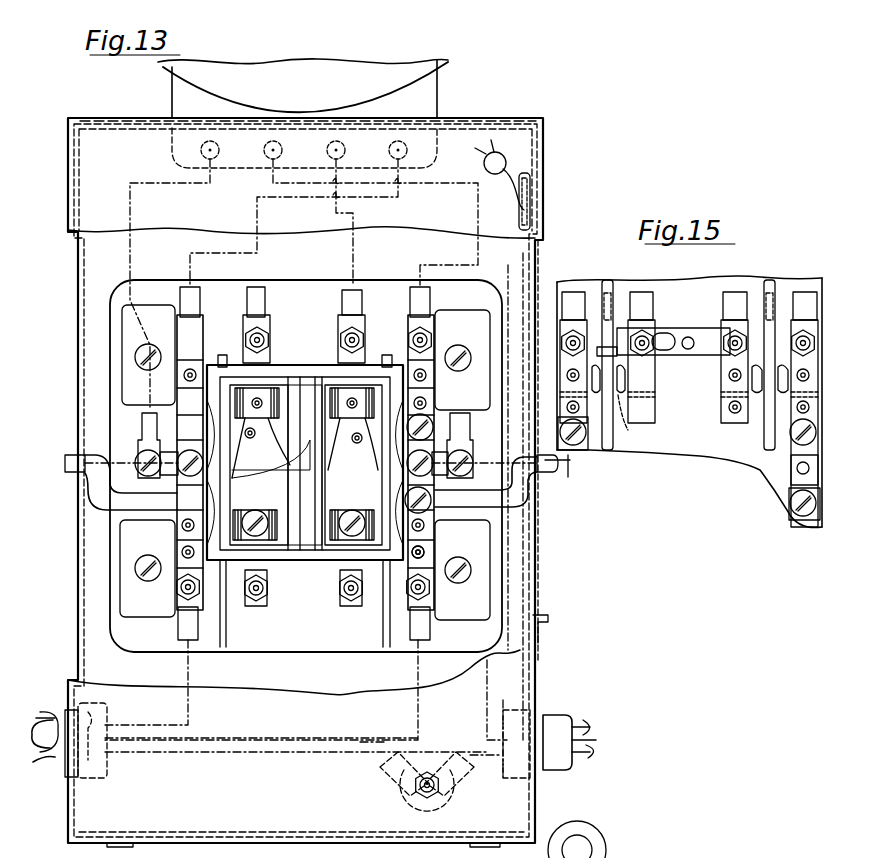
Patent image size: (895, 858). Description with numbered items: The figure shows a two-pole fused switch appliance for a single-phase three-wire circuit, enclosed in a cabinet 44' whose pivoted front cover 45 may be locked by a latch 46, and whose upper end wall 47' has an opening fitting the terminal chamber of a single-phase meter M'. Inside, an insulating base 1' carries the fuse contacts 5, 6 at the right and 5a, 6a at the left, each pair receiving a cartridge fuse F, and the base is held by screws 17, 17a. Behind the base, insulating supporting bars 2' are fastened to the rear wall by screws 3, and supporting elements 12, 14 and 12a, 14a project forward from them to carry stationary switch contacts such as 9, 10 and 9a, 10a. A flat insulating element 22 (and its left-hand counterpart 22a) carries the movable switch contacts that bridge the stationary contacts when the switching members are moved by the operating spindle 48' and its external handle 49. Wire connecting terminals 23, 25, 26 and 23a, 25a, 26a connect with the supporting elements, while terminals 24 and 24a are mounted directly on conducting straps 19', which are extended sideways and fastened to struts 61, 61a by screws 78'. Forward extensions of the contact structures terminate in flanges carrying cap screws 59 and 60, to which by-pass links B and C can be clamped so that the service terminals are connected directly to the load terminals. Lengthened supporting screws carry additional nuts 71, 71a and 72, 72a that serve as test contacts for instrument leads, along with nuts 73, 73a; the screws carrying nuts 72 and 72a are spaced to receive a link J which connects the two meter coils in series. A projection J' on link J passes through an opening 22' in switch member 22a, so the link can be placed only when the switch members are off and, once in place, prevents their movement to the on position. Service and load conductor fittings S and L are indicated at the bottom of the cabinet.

In FIG. 13, the front cover 45 is at (132, 166).
In FIG. 13, the upper end wall 47' is at (308, 106).
In FIG. 13, the latch 46 is at (532, 203).
In FIG. 13, the single phase meter M' is at (303, 99).
In FIG. 13, the wire connecting terminal 26a is at (185, 298).
In FIG. 15, the wire connecting terminal 26a is at (573, 292).
In FIG. 13, the wire connecting terminal 25a is at (262, 300).
In FIG. 15, the wire connecting terminal 25a is at (642, 292).
In FIG. 13, the wire connecting terminal 25 is at (356, 302).
In FIG. 15, the wire connecting terminal 25 is at (735, 292).
In FIG. 13, the wire connecting terminal 26 is at (427, 300).
In FIG. 15, the wire connecting terminal 26 is at (803, 292).
In FIG. 13, the supporting device 2' is at (306, 466).
In FIG. 15, the supporting device 2' is at (689, 389).
In FIG. 13, the screw 3 is at (162, 350).
In FIG. 13, the switch member 22a is at (225, 355).
In FIG. 15, the switch member 22a is at (622, 268).
In FIG. 13, the nut 72a is at (272, 340).
In FIG. 15, the nut 72a is at (650, 340).
In FIG. 13, the nut 72 is at (342, 341).
In FIG. 15, the nut 72 is at (725, 335).
In FIG. 13, the flat insulating element 22 is at (389, 346).
In FIG. 15, the flat insulating element 22 is at (775, 465).
In FIG. 13, the supporting element 14a is at (184, 378).
In FIG. 13, the supporting element 14 is at (60, 452).
In FIG. 15, the supporting element 14 is at (561, 474).
In FIG. 13, the cap screw 60 is at (428, 420).
In FIG. 15, the cap screw 60 is at (790, 430).
In FIG. 13, the fuse contact 6a is at (278, 405).
In FIG. 13, the fuse contact 6 is at (360, 410).
In FIG. 13, the wire connecting terminal 24a is at (145, 432).
In FIG. 13, the wire connecting terminal 24 is at (470, 438).
In FIG. 13, the fuse F is at (270, 465).
In FIG. 13, the screw 17a is at (258, 512).
In FIG. 13, the fuse contact 5a is at (280, 512).
In FIG. 13, the fuse contact 5 is at (372, 500).
In FIG. 13, the screw 17 is at (352, 512).
In FIG. 13, the conducting strap 19' is at (486, 482).
In FIG. 13, the screw 78' is at (438, 504).
In FIG. 13, the strut 61a is at (181, 525).
In FIG. 13, the strut 61 is at (426, 526).
In FIG. 13, the cap screw 59 is at (430, 515).
In FIG. 15, the cap screw 59 is at (790, 512).
In FIG. 13, the operating spindle 48' is at (108, 502).
In FIG. 13, the supporting element 12a is at (182, 560).
In FIG. 13, the terminal nut 73a is at (180, 592).
In FIG. 13, the nut 71a is at (268, 590).
In FIG. 13, the nut 71 is at (342, 592).
In FIG. 13, the supporting element 12 is at (428, 565).
In FIG. 13, the terminal nut 73 is at (428, 594).
In FIG. 13, the wire connecting terminal 23a is at (180, 634).
In FIG. 13, the wire connecting terminal 23 is at (422, 634).
In FIG. 13, the cabinet 44' is at (552, 450).
In FIG. 13, the service conductor clamp S is at (48, 712).
In FIG. 13, the load conductor clamp L is at (596, 740).
In FIG. 13, the operating handle 49 is at (600, 855).
In FIG. 13, the insulating base 1' is at (305, 452).
In FIG. 15, the link J is at (673, 328).
In FIG. 15, the projection J' is at (639, 363).
In FIG. 15, the stationary switch contact 9 is at (756, 369).
In FIG. 15, the stationary switch contact 10 is at (782, 368).
In FIG. 15, the stationary switch contact 10a is at (574, 387).
In FIG. 15, the stationary switch contact 9a is at (640, 425).
In FIG. 15, the opening 22' is at (629, 419).
In FIG. 15, the link C is at (588, 450).
In FIG. 15, the link B is at (796, 462).